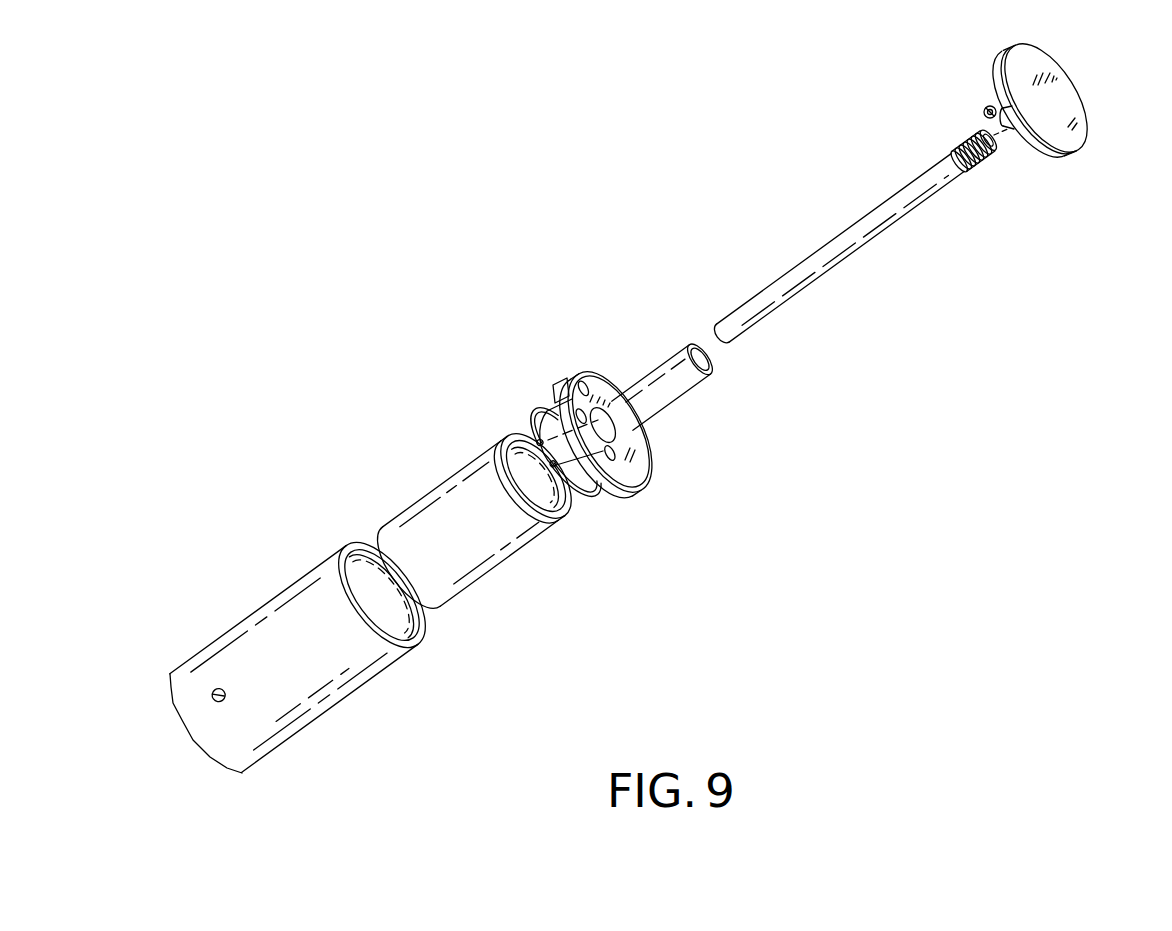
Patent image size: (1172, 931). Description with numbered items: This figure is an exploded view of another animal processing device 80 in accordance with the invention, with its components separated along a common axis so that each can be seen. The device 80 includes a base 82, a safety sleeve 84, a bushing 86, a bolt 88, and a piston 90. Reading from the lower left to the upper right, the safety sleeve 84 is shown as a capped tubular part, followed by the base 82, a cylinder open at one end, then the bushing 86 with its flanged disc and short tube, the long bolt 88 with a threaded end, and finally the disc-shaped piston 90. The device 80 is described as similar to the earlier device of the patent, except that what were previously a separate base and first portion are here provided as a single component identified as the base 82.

The device 80 is at (504, 292).
The base 82 is at (480, 570).
The safety sleeve 84 is at (327, 693).
The bushing 86 is at (663, 365).
The bolt 88 is at (848, 242).
The piston 90 is at (1065, 92).